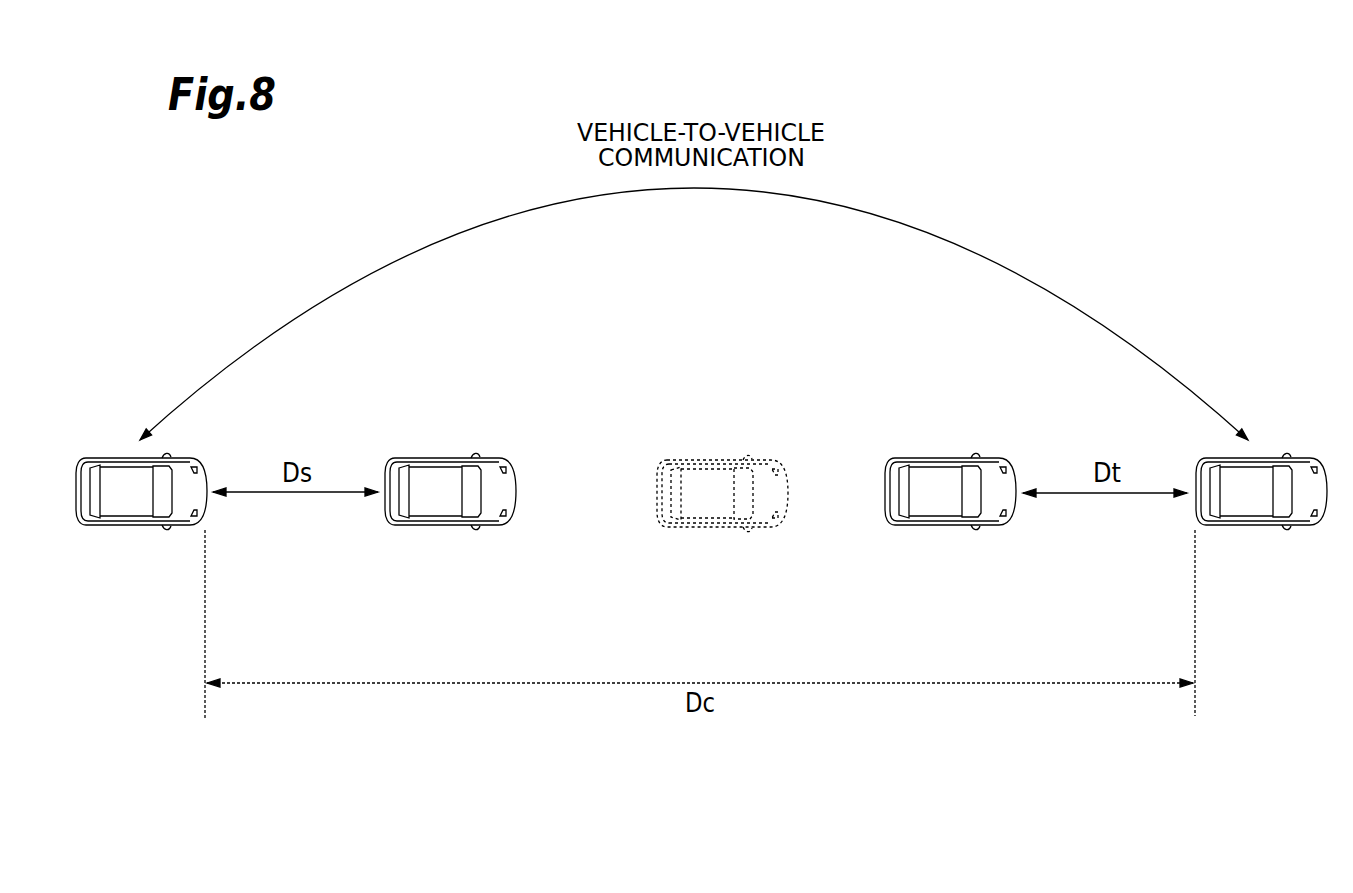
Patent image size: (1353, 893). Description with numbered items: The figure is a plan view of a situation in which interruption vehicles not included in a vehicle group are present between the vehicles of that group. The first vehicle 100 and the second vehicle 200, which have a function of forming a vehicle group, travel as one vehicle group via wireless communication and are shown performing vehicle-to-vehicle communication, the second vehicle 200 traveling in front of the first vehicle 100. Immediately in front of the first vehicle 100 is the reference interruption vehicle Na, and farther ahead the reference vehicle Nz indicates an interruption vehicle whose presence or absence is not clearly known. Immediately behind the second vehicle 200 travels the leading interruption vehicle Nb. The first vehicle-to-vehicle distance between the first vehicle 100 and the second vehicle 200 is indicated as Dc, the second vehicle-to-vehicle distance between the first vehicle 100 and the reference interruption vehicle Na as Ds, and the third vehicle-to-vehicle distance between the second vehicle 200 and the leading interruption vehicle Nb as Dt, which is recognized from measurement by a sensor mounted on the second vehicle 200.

The first vehicle 100 is at (137, 528).
The second vehicle 200 is at (1256, 528).
The reference interruption vehicle Na is at (440, 455).
The reference vehicle Nz is at (717, 455).
The leading interruption vehicle Nb is at (944, 455).